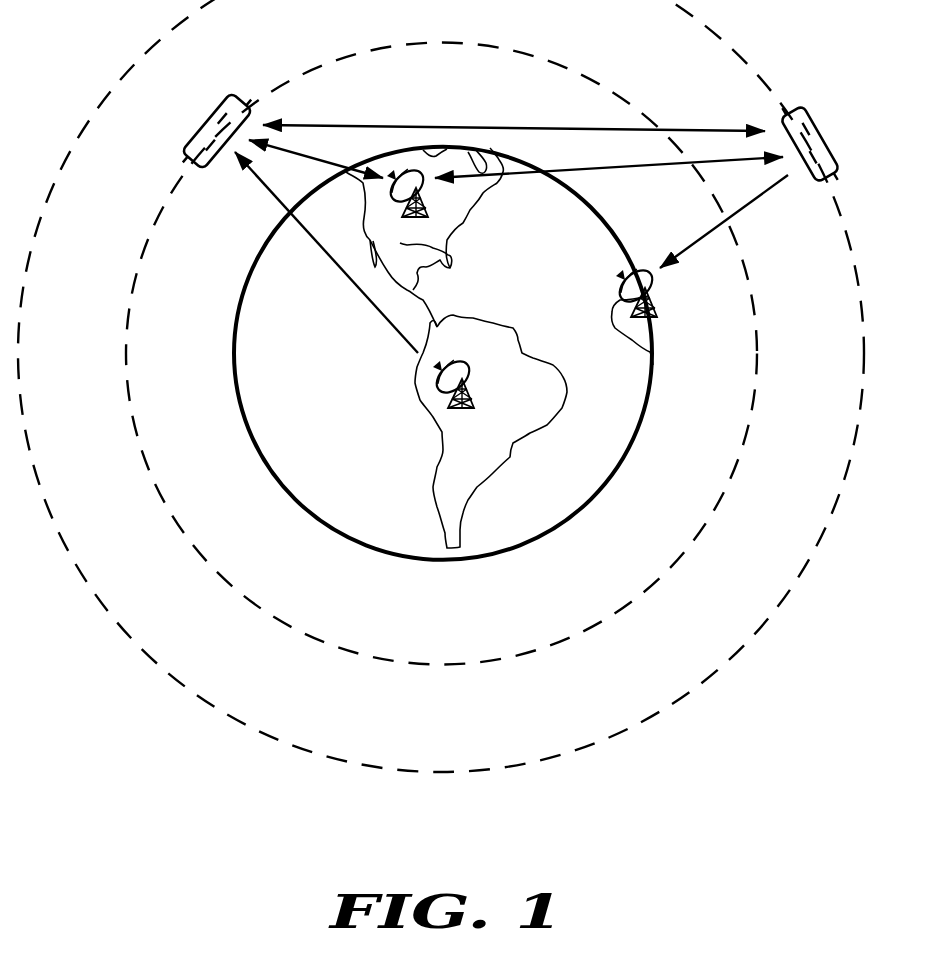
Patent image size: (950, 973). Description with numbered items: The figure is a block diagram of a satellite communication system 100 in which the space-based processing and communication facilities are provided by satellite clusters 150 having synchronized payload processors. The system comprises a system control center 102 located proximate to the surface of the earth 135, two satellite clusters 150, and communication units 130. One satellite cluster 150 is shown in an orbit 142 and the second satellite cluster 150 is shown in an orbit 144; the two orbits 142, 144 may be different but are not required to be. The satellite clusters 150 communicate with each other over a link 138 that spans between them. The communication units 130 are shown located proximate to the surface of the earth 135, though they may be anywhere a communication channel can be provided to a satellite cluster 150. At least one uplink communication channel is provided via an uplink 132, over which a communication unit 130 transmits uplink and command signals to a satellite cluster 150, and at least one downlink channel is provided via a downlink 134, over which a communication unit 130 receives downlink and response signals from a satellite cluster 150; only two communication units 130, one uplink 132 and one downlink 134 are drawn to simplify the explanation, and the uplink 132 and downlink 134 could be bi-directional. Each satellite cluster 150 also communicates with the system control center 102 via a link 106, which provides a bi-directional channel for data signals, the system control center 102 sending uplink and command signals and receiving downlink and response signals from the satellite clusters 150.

The satellite communication system 100 is at (679, 867).
The system control center 102 is at (423, 198).
The link 106 is at (317, 159).
The communication unit 130 is at (476, 373).
The uplink 132 is at (320, 247).
The downlink 134 is at (750, 210).
The earth 135 is at (364, 424).
The link 138 is at (514, 126).
The orbit 142 is at (420, 774).
The orbit 144 is at (415, 666).
The satellite cluster 150 is at (203, 118).